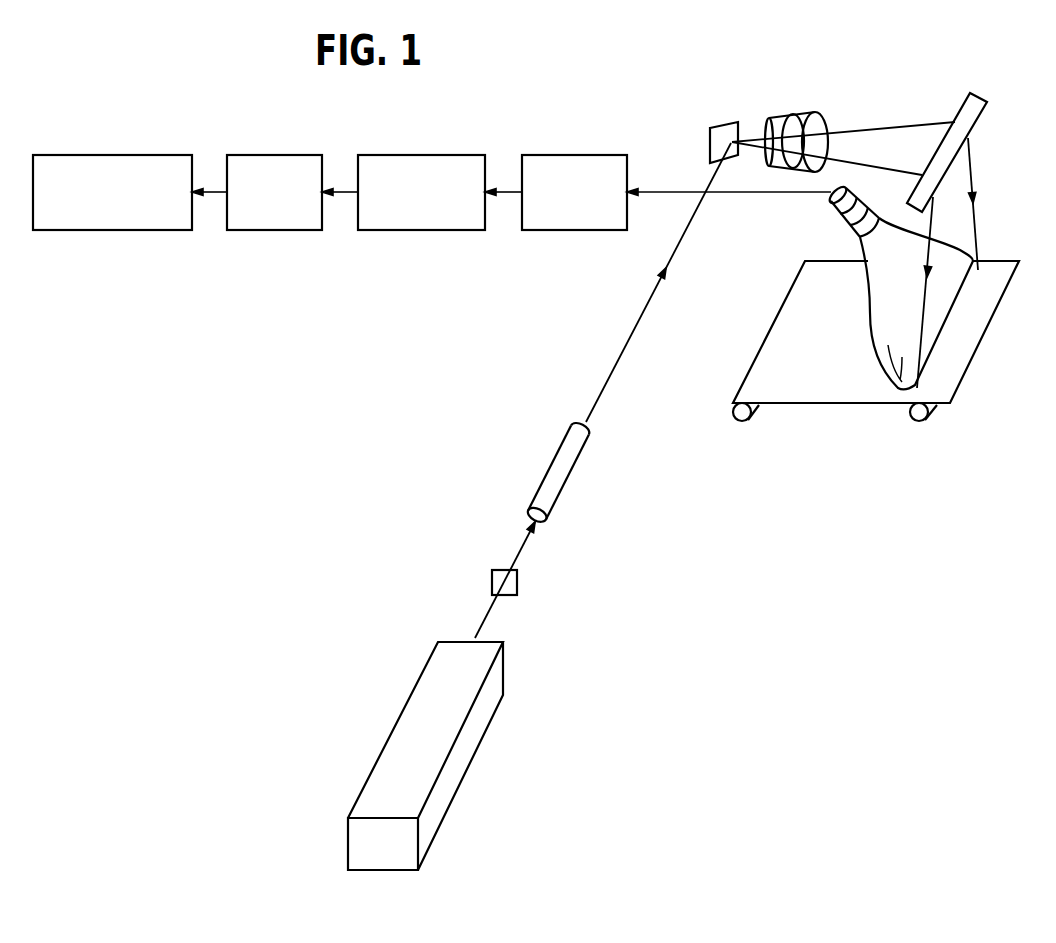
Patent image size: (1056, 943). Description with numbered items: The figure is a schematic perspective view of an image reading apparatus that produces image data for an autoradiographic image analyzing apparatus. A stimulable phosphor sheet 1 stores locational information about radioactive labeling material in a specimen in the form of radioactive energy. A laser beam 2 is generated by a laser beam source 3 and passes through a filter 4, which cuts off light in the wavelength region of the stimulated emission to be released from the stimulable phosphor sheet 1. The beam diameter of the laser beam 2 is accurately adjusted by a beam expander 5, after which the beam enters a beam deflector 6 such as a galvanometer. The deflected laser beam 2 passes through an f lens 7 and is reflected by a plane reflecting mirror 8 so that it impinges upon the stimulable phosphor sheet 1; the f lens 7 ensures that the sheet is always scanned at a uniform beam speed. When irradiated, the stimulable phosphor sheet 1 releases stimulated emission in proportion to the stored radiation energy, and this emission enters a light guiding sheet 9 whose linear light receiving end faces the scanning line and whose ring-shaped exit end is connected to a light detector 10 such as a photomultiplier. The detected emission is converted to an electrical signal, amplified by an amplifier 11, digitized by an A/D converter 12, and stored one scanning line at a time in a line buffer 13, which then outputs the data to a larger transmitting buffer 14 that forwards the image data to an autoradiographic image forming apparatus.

The stimulable phosphor sheet 1 is at (818, 378).
The laser beam 2 is at (975, 182).
The laser beam source 3 is at (442, 670).
The filter 4 is at (493, 578).
The beam expander 5 is at (553, 475).
The beam deflector 6 is at (731, 132).
The f lens 7 is at (800, 116).
The plane reflecting mirror 8 is at (962, 115).
The light guiding sheet 9 is at (898, 384).
The light detector 10 is at (838, 210).
The amplifier 11 is at (587, 154).
The A/D converter 12 is at (426, 154).
The line buffer 13 is at (278, 154).
The transmitting buffer 14 is at (129, 154).